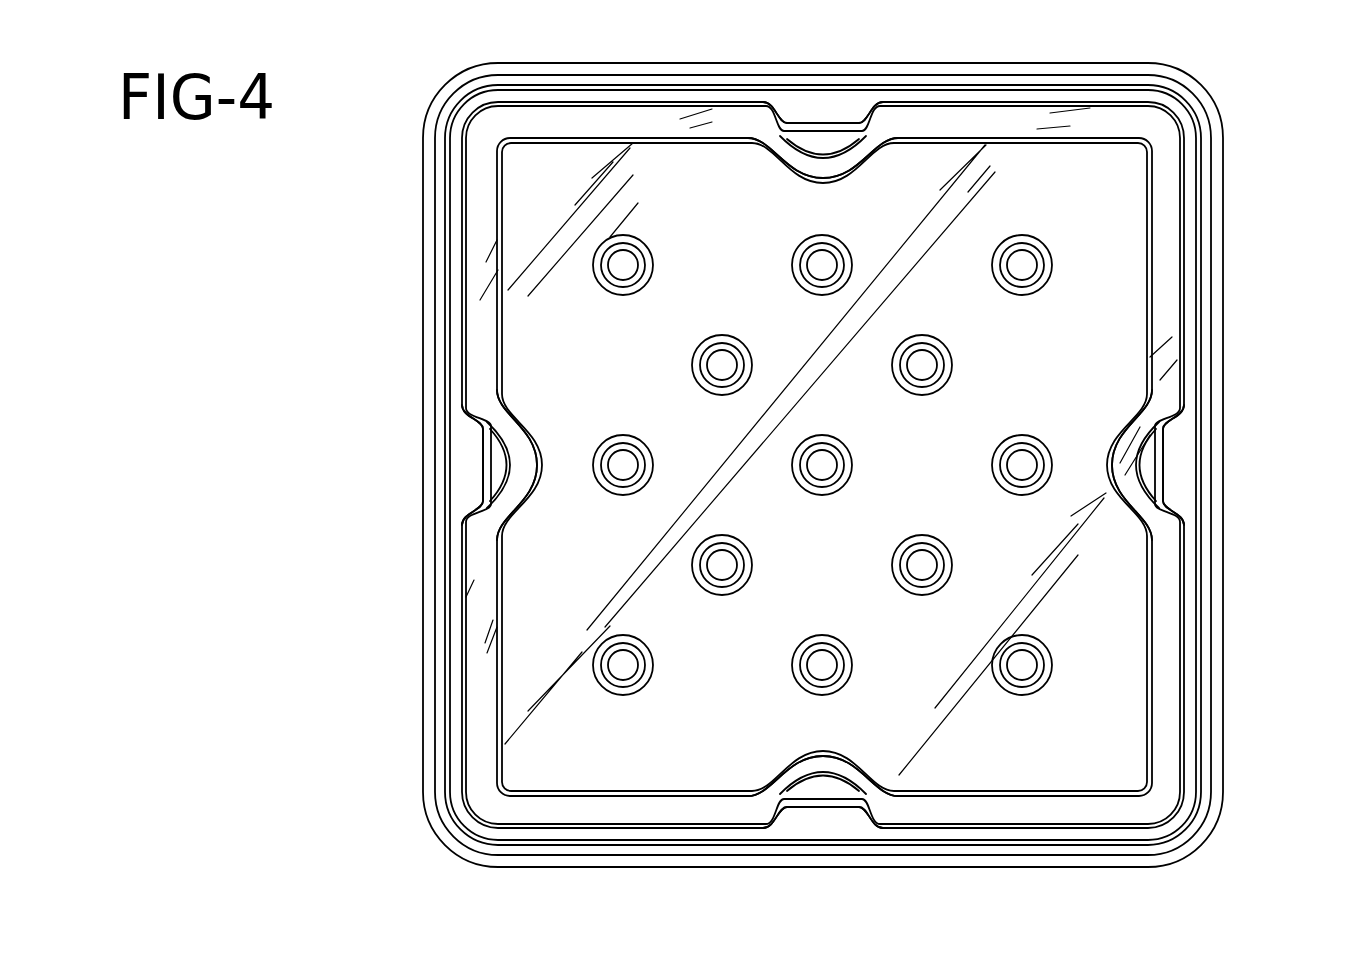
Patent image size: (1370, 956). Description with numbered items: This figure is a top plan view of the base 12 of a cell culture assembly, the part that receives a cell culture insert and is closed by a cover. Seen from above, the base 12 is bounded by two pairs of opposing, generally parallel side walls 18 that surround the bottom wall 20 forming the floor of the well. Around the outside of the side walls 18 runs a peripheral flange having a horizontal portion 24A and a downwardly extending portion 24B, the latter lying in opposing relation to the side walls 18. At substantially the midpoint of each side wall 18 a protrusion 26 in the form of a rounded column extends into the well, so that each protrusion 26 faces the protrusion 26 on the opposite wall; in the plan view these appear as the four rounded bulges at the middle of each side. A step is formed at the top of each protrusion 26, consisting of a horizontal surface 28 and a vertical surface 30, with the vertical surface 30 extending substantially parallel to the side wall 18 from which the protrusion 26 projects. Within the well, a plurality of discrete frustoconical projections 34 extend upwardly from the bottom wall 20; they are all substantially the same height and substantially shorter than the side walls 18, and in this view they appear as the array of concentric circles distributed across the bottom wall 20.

The base 12 is at (1230, 111).
The side walls 18 is at (560, 111).
The bottom wall 20 is at (530, 265).
The horizontal portion 24A is at (1195, 693).
The downwardly extending portion 24B is at (1215, 768).
The protrusion 26 is at (530, 474).
The horizontal surface 28 is at (1142, 472).
The vertical surface 30 is at (496, 479).
The frustoconical projections 34 is at (617, 470).